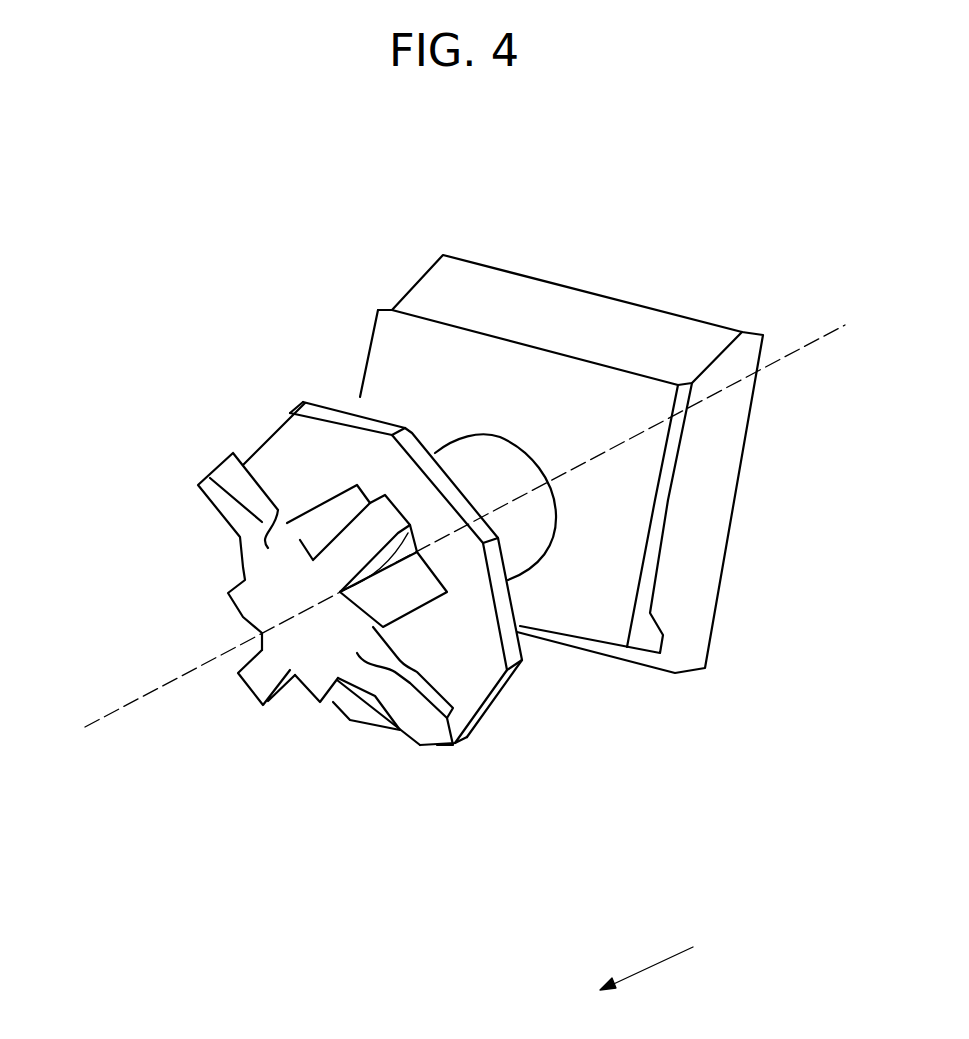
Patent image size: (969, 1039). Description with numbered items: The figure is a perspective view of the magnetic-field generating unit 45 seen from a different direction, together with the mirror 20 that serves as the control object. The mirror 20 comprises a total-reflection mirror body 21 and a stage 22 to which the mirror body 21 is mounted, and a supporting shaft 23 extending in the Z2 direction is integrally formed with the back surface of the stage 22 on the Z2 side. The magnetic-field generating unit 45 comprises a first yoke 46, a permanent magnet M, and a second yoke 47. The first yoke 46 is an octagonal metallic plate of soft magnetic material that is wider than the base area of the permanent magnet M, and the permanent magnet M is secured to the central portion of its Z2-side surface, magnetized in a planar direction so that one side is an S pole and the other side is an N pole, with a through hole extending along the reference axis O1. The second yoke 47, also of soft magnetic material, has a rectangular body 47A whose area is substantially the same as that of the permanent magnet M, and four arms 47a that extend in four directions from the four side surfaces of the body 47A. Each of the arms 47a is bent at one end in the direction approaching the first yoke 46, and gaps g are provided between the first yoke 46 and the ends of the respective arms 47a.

The mirror 20 is at (637, 464).
The total-reflection mirror body 21 is at (750, 425).
The stage 22 is at (637, 502).
The supporting shaft 23 is at (530, 535).
The magnetic-field generating unit 45 is at (183, 381).
The first yoke 46 is at (455, 712).
The second yoke 47 is at (243, 617).
The body 47A is at (305, 690).
The arms 47a is at (375, 525).
The permanent magnet M is at (335, 515).
The gaps g is at (263, 468).
The reference axis O1 is at (459, 530).
The Z2 direction Z2 is at (628, 982).